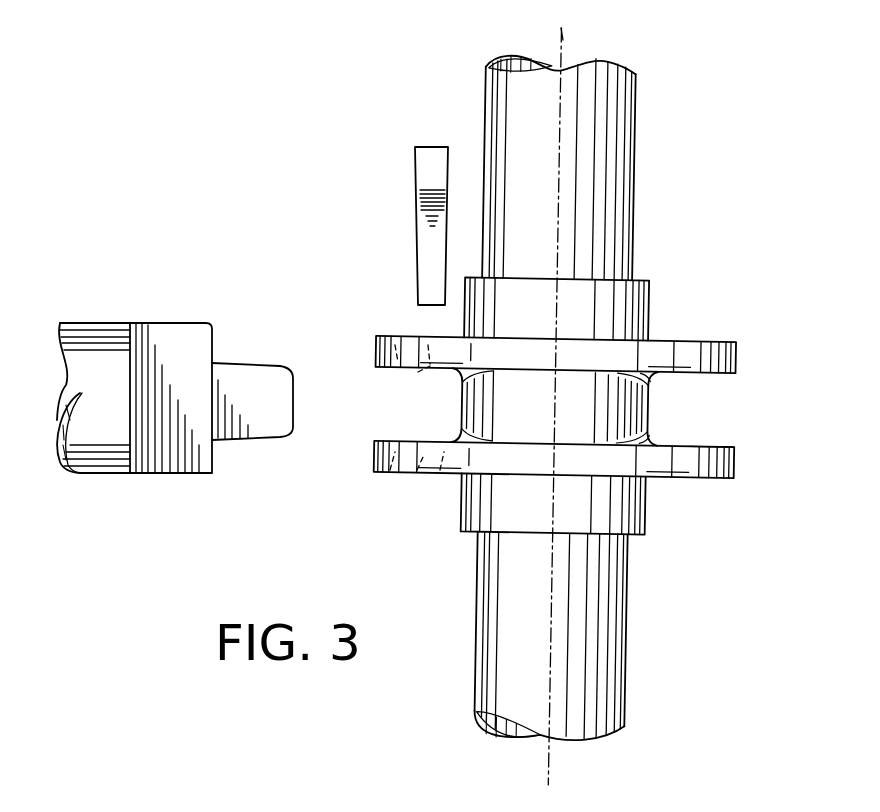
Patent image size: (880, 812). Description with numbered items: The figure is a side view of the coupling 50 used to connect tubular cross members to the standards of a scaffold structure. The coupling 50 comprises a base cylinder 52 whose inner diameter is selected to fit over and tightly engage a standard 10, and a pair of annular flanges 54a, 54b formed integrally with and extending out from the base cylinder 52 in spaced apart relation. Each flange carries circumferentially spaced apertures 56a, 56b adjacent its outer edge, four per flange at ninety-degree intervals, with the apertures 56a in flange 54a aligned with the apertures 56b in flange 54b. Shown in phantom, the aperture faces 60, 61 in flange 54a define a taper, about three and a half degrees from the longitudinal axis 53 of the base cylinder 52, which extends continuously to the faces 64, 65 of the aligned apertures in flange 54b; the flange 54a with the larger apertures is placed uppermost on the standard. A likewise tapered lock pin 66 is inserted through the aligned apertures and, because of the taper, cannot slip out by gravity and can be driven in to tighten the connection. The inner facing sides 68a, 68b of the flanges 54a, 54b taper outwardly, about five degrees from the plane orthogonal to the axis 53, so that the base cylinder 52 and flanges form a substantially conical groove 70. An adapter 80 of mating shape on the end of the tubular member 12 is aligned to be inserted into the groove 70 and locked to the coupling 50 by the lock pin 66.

The standard 10 is at (632, 172).
The tubular member 12 is at (100, 352).
The coupling 50 is at (650, 302).
The base cylinder 52 is at (649, 398).
The longitudinal axis 53 is at (562, 40).
The annular flange 54a is at (735, 352).
The annular flange 54b is at (735, 463).
The apertures 56a is at (423, 371).
The apertures 56b is at (417, 472).
The tapered face 60 is at (405, 356).
The tapered face 61 is at (445, 354).
The face 64 is at (388, 476).
The face 65 is at (440, 472).
The lock pin 66 is at (426, 177).
The inner facing side 68a is at (648, 376).
The inner facing side 68b is at (667, 449).
The groove 70 is at (717, 434).
The adapter 80 is at (172, 322).